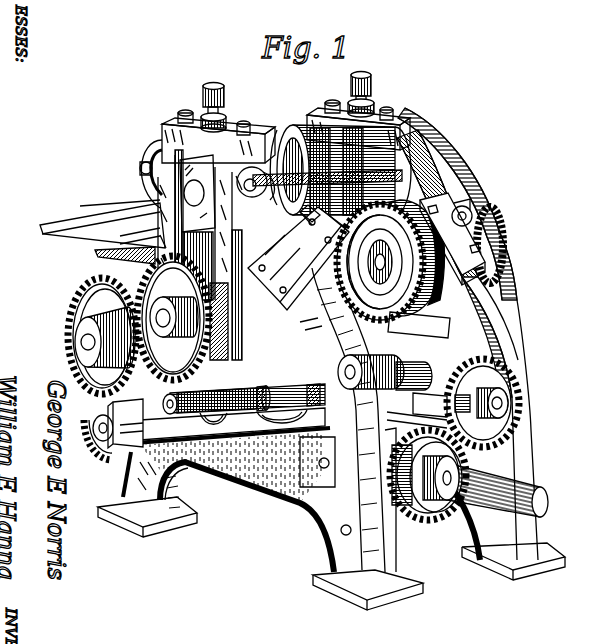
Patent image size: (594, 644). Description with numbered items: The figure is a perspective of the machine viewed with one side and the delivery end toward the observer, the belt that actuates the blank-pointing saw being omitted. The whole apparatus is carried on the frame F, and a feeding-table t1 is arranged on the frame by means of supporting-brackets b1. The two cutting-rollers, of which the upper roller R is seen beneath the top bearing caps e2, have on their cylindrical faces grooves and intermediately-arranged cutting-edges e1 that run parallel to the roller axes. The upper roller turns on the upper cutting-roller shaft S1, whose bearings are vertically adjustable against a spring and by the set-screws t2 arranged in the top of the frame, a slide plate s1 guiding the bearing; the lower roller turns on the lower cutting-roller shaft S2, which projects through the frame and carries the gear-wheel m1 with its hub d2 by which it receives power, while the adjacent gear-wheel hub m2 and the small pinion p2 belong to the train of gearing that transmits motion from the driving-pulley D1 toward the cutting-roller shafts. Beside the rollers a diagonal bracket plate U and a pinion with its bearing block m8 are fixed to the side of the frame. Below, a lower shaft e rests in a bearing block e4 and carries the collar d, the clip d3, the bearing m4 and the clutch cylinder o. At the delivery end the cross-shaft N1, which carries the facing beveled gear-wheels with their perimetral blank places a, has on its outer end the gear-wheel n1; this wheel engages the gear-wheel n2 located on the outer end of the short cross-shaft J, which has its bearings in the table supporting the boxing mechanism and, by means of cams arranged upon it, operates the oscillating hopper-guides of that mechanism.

The frame F is at (522, 362).
The driving-pulley D1 is at (463, 176).
The bearing caps e2 is at (250, 132).
The set-screws t2 is at (224, 93).
The slide plate s1 is at (201, 225).
The roller R is at (340, 161).
The cutting-edges e1 is at (282, 152).
The pinion and bearing block m8 is at (503, 233).
The feeding-table t1 is at (102, 224).
The supporting-brackets b1 is at (100, 258).
The perimetral blank places a is at (226, 294).
The diagonal bracket plate U is at (300, 318).
The lower cutting-roller shaft S2 is at (173, 318).
The gear rim m1 is at (173, 320).
The gear hub d2 is at (186, 312).
The upper cutting-roller shaft S1 is at (102, 336).
The gear hub m2 is at (105, 343).
The pinion p2 is at (86, 448).
The lower shaft e is at (241, 396).
The bearing block e4 is at (125, 423).
The shaft collar d is at (231, 394).
The shaft clip d3 is at (240, 396).
The shaft bearing m4 is at (285, 394).
The clutch cylinder o is at (394, 370).
The short cross-shaft J is at (513, 392).
The gear-wheel n2 is at (512, 420).
The gear-wheel n1 is at (428, 485).
The cross-shaft N1 is at (572, 494).